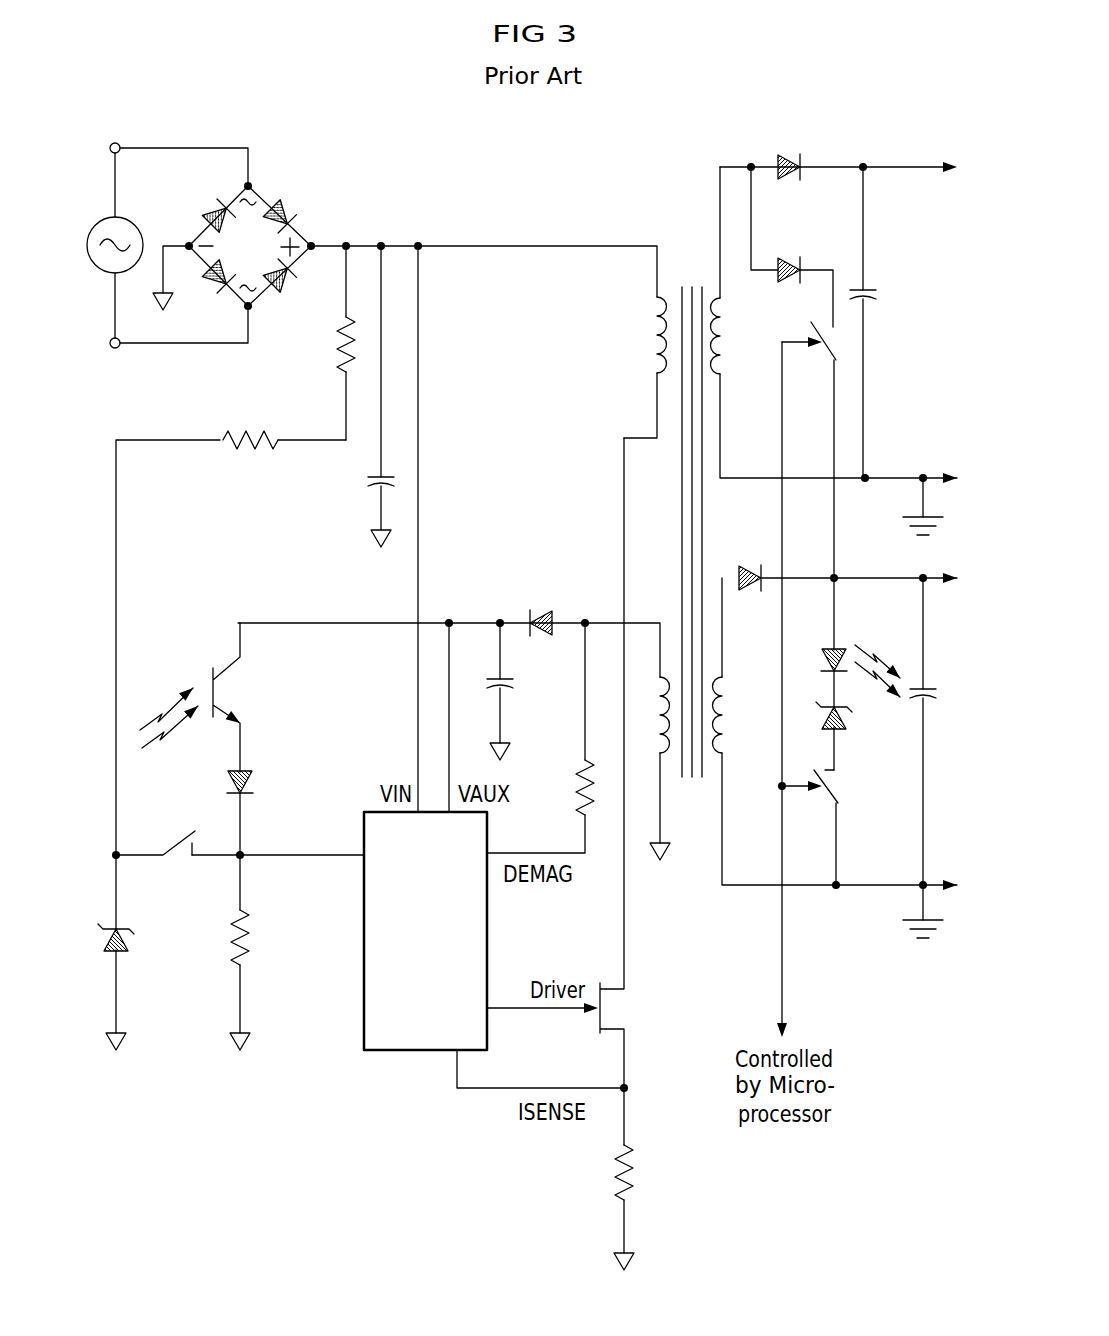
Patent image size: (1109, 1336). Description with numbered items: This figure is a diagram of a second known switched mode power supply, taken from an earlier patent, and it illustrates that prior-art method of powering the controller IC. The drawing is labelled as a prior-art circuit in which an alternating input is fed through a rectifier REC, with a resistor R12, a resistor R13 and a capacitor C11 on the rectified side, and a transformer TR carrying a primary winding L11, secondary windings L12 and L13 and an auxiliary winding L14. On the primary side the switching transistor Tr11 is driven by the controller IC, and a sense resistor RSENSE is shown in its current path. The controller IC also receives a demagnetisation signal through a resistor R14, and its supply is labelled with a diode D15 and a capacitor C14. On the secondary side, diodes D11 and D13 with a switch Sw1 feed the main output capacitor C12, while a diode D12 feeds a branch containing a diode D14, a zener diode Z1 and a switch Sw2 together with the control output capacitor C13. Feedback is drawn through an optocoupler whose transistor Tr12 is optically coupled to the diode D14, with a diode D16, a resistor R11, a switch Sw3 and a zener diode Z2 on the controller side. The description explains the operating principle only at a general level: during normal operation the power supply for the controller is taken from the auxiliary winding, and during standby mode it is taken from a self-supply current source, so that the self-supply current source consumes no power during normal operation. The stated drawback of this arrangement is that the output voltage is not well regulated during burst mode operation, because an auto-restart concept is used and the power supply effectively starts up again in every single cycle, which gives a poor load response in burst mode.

The bridge rectifier REC is at (283, 212).
The resistor R12 is at (340, 346).
The resistor R13 is at (228, 436).
The input capacitor C11 is at (370, 480).
The diode D15 is at (540, 612).
The VAUX capacitor C14 is at (532, 745).
The demagnetization resistor R14 is at (578, 796).
The controller IC is at (425, 931).
The switching transistor Tr11 is at (630, 1010).
The current sense resistor RSENSE is at (671, 1207).
The optocoupler transistor Tr12 is at (205, 682).
The optocoupler diode D16 is at (252, 780).
The switch Sw3 is at (178, 835).
The zener diode Z2 is at (140, 940).
The resistor R11 is at (252, 948).
The transformer TR is at (688, 258).
The primary winding L11 is at (652, 345).
The secondary winding L12 is at (727, 325).
The secondary winding L13 is at (715, 690).
The auxiliary winding L14 is at (662, 755).
The rectifier diode D11 is at (790, 160).
The diode D13 is at (790, 262).
The switch Sw1 is at (822, 357).
The main output capacitor C12 is at (870, 287).
The rectifier diode D12 is at (745, 568).
The light emitting diode D14 is at (840, 648).
The zener diode Z1 is at (840, 728).
The switch Sw2 is at (826, 790).
The control output capacitor C13 is at (932, 705).